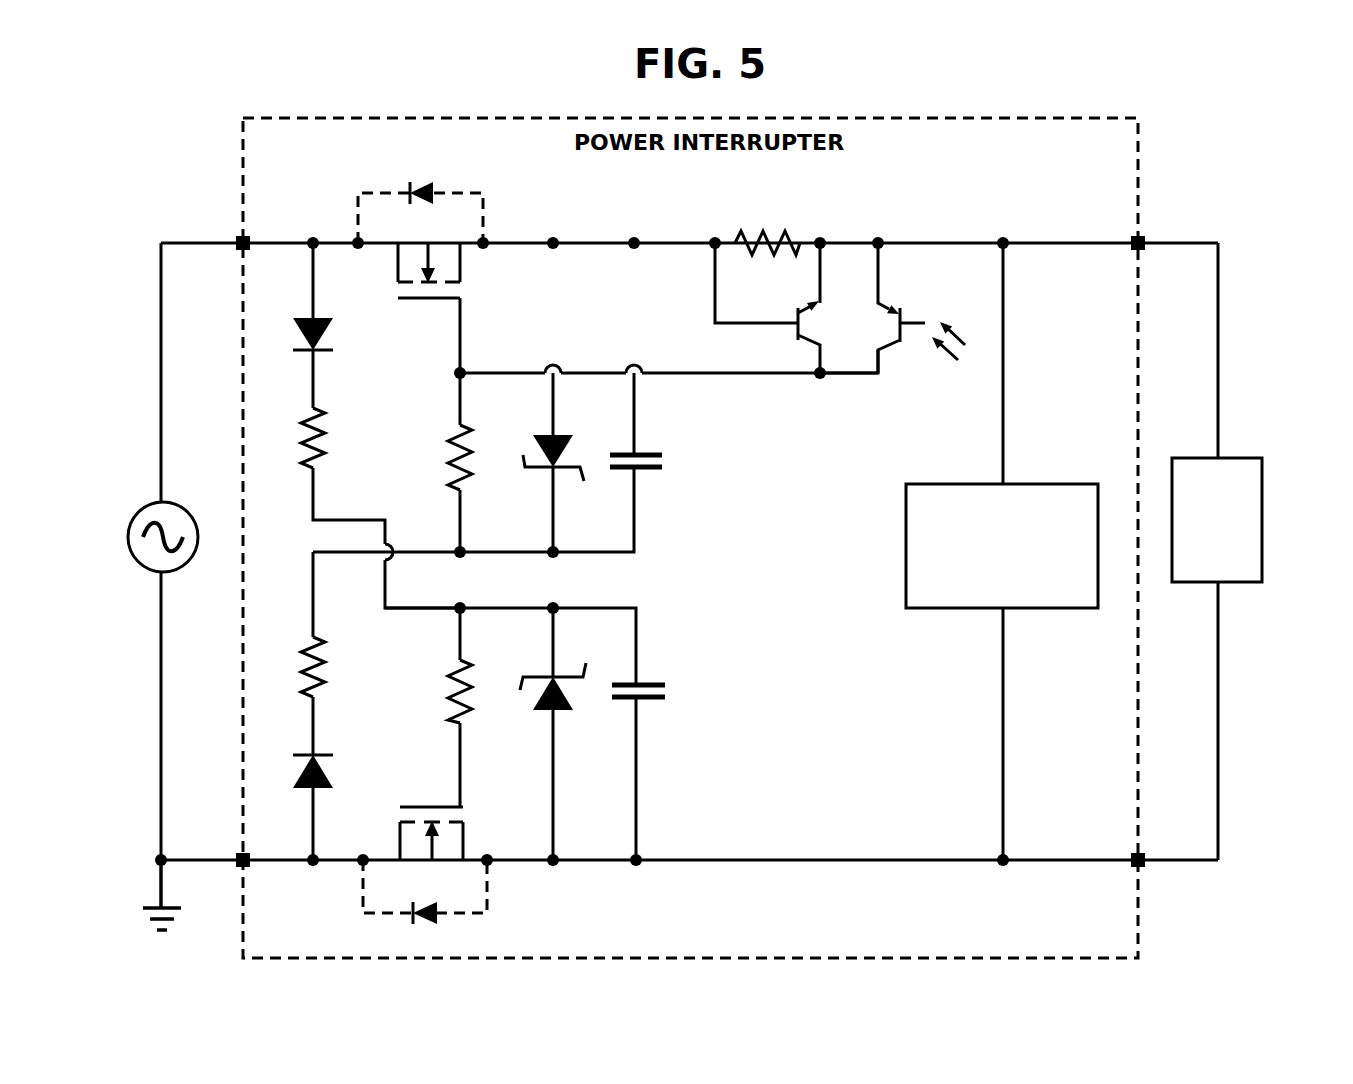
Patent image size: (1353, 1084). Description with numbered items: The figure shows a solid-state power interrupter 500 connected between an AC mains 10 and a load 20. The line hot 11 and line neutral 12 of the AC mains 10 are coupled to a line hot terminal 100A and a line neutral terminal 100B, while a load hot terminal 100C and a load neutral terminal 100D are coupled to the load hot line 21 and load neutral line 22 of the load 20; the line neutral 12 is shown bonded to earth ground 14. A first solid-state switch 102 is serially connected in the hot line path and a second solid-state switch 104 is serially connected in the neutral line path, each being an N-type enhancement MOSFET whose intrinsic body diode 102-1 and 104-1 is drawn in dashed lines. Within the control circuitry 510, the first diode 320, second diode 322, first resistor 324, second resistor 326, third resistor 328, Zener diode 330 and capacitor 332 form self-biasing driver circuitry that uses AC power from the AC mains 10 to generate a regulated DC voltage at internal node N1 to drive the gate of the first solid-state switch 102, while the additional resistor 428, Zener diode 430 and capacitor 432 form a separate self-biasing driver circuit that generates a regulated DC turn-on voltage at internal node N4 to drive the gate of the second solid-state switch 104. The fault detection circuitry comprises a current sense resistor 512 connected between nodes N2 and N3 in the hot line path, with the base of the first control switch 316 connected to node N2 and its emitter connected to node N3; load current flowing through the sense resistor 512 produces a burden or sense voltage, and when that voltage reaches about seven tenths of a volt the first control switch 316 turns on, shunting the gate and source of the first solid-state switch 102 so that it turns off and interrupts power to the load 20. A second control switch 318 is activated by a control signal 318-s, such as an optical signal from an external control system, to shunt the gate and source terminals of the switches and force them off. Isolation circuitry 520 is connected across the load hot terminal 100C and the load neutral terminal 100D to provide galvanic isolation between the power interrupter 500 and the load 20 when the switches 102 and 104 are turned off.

The solid-state power interrupter 500 is at (272, 119).
The AC mains 10 is at (128, 536).
The line hot 11 is at (161, 289).
The line neutral 12 is at (161, 815).
The earth ground 14 is at (140, 906).
The load 20 is at (1263, 512).
The load hot line 21 is at (1219, 372).
The load neutral line 22 is at (1219, 676).
The line hot terminal 100A is at (238, 241).
The line neutral terminal 100B is at (240, 868).
The load hot terminal 100C is at (1148, 240).
The load neutral terminal 100D is at (1146, 866).
The first solid-state switch 102 is at (411, 313).
The body diode 102-1 is at (433, 185).
The second solid-state switch 104 is at (430, 775).
The body diode 104-1 is at (437, 924).
The first diode 320 is at (309, 320).
The second diode 322 is at (310, 786).
The first resistor 324 is at (309, 418).
The second resistor 326 is at (309, 646).
The third resistor 328 is at (466, 429).
The Zener diode 330 is at (559, 436).
The capacitor 332 is at (654, 455).
The resistor 428 is at (456, 672).
The Zener diode 430 is at (563, 706).
The capacitor 432 is at (657, 699).
The first control switch 316 is at (797, 307).
The second control switch 318 is at (903, 308).
The control signal 318-s is at (967, 352).
The current sense resistor 512 is at (762, 232).
The control circuitry 510 is at (755, 606).
The isolation circuitry 520 is at (1033, 485).
The internal node N1 is at (455, 546).
The node N2 is at (712, 234).
The node N3 is at (820, 234).
The internal node N4 is at (466, 604).